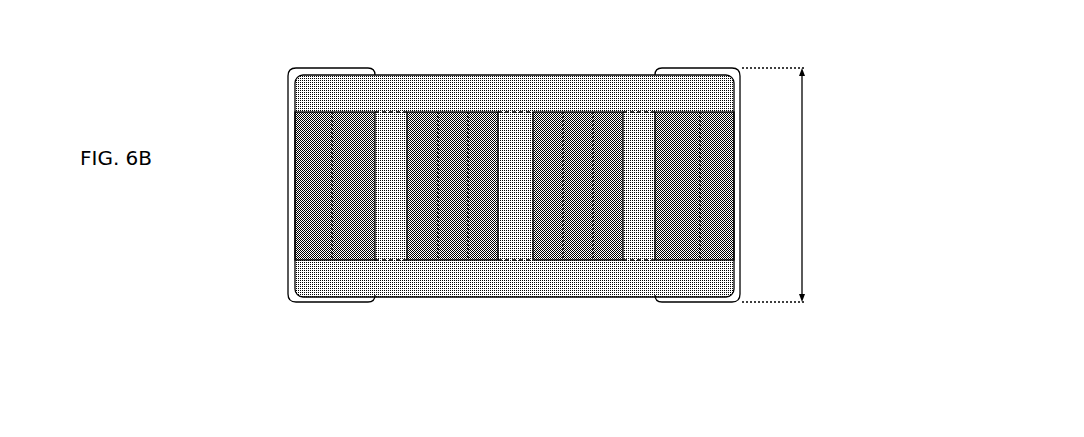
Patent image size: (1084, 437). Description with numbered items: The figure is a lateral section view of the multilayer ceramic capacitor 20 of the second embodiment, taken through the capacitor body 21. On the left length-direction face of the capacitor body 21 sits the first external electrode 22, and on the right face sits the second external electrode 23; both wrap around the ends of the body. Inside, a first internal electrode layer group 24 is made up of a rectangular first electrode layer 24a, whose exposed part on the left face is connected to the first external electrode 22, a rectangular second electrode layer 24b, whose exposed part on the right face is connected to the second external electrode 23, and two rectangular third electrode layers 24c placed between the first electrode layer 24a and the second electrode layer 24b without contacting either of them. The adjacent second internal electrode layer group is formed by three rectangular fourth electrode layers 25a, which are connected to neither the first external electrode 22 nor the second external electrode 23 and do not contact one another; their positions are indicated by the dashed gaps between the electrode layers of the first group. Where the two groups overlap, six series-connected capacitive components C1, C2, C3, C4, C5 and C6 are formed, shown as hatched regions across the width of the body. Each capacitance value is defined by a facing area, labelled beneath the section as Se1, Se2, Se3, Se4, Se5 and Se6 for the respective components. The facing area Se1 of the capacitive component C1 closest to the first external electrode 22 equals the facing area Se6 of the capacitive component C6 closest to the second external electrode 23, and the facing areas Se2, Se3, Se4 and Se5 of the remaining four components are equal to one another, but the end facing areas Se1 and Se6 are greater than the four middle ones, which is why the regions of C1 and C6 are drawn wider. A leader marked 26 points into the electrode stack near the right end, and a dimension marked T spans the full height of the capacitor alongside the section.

The multilayer ceramic capacitor 20 is at (299, 64).
The capacitor body 21 is at (484, 75).
The first external electrode 22 is at (318, 68).
The second external electrode 23 is at (710, 68).
The first internal electrode layer group 24 is at (735, 161).
The first electrode layer 24a is at (322, 137).
The second electrode layer 24b is at (707, 137).
The third electrode layer 24c is at (447, 137).
The fourth electrode layer 25a is at (392, 135).
The dielectric layer 26 is at (705, 215).
The capacitive component C1 is at (345, 186).
The capacitive component C2 is at (426, 186).
The capacitive component C3 is at (479, 186).
The capacitive component C4 is at (551, 186).
The capacitive component C5 is at (604, 186).
The capacitive component C6 is at (685, 186).
The facing area Se1 is at (352, 243).
The facing area Se2 is at (423, 243).
The facing area Se3 is at (485, 243).
The facing area Se4 is at (550, 243).
The facing area Se5 is at (608, 243).
The facing area Se6 is at (678, 243).
The thickness T is at (777, 185).